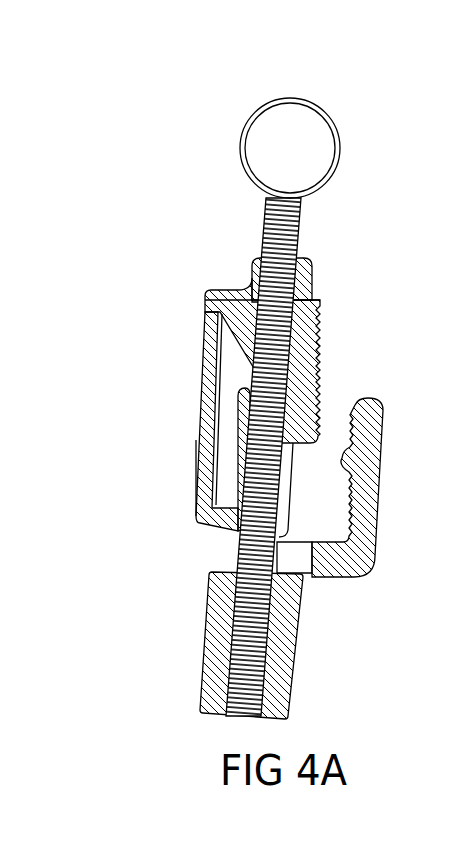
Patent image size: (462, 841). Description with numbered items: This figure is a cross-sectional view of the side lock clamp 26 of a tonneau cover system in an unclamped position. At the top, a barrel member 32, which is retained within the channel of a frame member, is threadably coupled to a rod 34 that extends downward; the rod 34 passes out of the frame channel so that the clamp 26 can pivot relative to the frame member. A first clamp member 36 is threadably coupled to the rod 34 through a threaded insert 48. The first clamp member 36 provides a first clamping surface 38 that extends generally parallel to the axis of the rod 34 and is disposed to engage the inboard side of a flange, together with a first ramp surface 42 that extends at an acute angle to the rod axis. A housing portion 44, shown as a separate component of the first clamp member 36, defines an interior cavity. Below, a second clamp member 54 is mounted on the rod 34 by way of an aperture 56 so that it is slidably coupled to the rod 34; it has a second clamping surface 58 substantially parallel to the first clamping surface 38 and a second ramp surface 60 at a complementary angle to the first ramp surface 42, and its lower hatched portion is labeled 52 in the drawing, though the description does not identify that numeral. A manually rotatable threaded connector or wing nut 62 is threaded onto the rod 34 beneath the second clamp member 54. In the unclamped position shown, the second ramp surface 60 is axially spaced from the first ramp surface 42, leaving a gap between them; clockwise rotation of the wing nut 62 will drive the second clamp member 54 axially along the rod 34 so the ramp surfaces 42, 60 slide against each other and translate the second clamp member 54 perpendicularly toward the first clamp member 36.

The side lock clamp 26 is at (307, 389).
The barrel member 32 is at (325, 157).
The rod 34 is at (302, 212).
The first clamp member 36 is at (325, 295).
The first clamping surface 38 is at (319, 350).
The first ramp surface 42 is at (225, 347).
The housing portion 44 is at (200, 412).
The threaded insert 48 is at (250, 292).
The hook foot 52 is at (335, 575).
The second clamp member 54 is at (384, 506).
The aperture 56 is at (288, 552).
The second clamping surface 58 is at (350, 442).
The second ramp surface 60 is at (240, 387).
The wing nut 62 is at (192, 665).